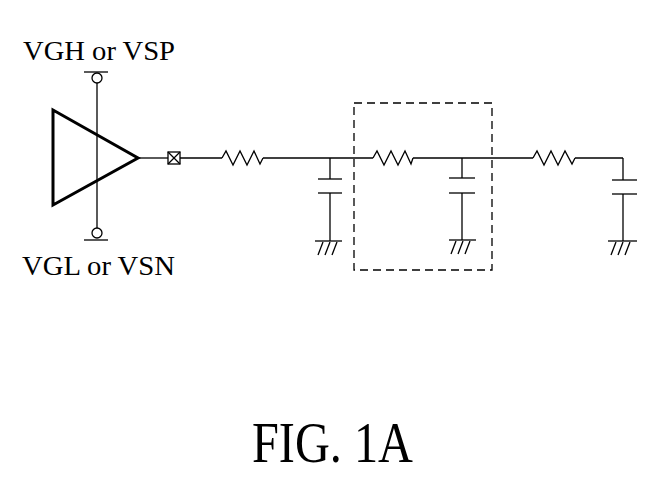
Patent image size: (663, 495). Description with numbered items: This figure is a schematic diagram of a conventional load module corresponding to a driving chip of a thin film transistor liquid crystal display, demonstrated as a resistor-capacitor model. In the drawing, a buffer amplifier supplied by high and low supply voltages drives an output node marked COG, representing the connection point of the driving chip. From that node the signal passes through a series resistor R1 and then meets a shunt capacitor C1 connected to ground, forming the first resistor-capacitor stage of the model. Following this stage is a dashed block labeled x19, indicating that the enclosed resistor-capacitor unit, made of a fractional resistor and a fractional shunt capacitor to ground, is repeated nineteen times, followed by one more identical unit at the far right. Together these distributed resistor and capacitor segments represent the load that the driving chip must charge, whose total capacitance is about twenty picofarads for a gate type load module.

The chip-on-glass connection point COG is at (170, 173).
The first resistor R1 is at (242, 141).
The first capacitor C1 is at (312, 206).
The repeated RC unit count x19 is at (430, 169).